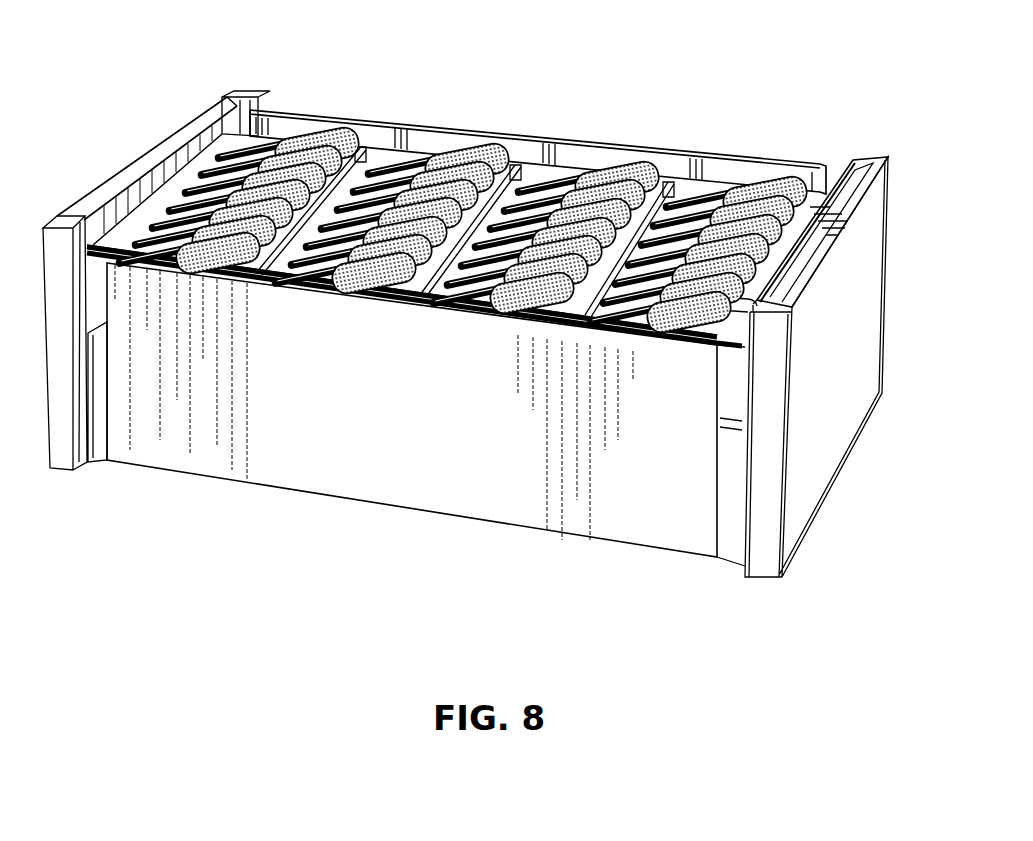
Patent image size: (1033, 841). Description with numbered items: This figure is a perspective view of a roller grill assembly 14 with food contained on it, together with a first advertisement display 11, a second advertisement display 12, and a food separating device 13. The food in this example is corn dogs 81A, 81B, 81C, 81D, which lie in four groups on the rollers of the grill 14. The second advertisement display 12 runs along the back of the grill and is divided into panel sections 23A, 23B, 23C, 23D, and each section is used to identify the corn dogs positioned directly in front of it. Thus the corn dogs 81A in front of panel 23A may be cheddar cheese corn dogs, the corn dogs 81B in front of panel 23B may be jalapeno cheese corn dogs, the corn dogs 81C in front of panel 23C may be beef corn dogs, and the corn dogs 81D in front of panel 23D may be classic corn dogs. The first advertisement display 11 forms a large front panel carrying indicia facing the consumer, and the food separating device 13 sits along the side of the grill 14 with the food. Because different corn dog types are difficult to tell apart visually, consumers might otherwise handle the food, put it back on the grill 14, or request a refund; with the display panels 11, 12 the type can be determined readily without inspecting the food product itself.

The first advertisement display 11 is at (608, 525).
The second advertisement display 12 is at (538, 104).
The food separating device 13 is at (843, 190).
The roller grill assembly 14 is at (36, 282).
The panel section 23A is at (367, 122).
The panel section 23B is at (512, 137).
The panel section 23C is at (573, 143).
The panel section 23D is at (730, 170).
The corn dogs 81A is at (285, 160).
The corn dogs 81B is at (430, 177).
The corn dogs 81C is at (640, 207).
The corn dogs 81D is at (803, 210).